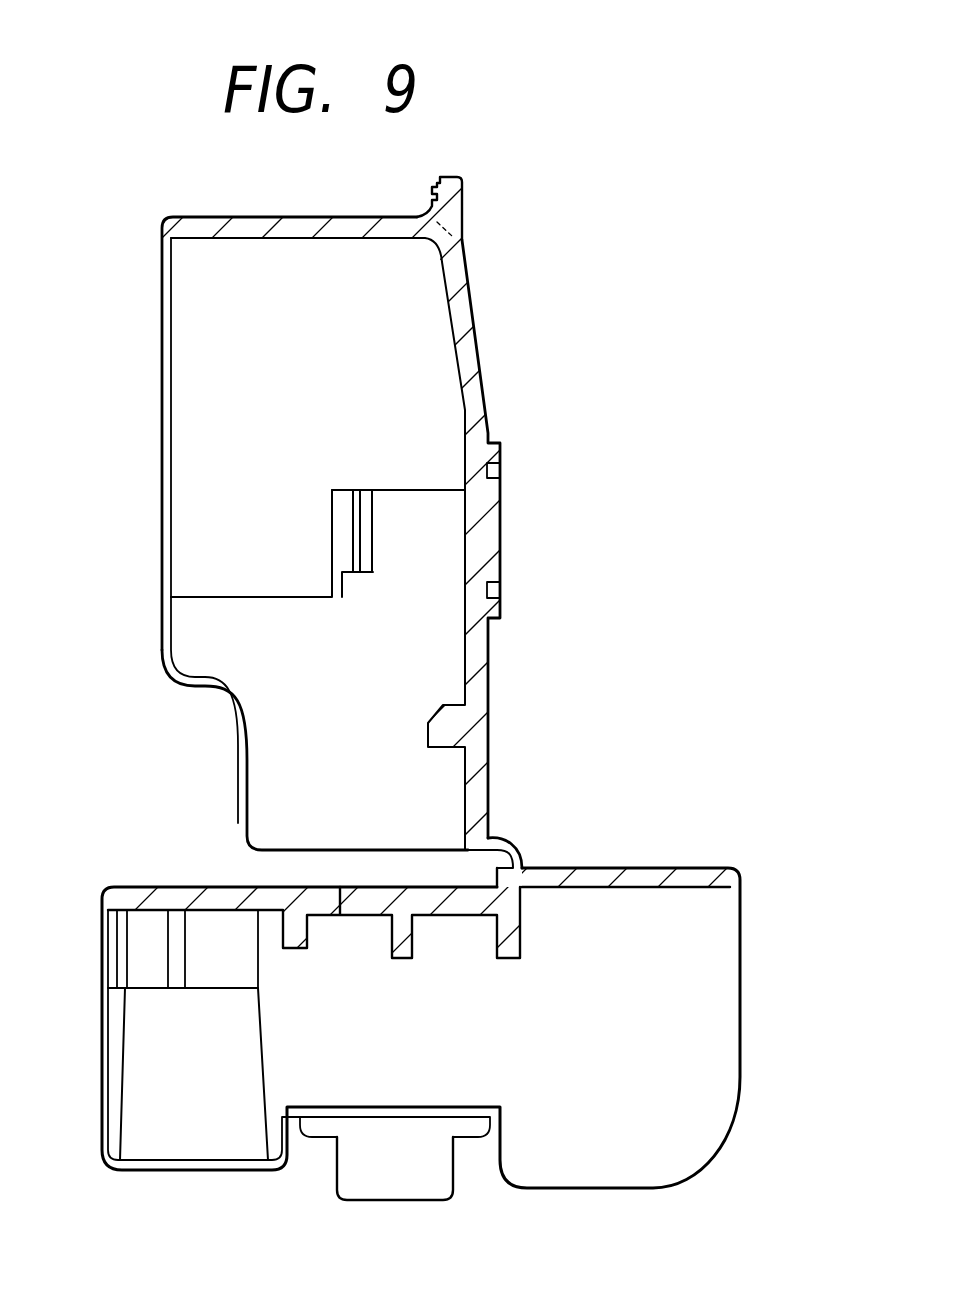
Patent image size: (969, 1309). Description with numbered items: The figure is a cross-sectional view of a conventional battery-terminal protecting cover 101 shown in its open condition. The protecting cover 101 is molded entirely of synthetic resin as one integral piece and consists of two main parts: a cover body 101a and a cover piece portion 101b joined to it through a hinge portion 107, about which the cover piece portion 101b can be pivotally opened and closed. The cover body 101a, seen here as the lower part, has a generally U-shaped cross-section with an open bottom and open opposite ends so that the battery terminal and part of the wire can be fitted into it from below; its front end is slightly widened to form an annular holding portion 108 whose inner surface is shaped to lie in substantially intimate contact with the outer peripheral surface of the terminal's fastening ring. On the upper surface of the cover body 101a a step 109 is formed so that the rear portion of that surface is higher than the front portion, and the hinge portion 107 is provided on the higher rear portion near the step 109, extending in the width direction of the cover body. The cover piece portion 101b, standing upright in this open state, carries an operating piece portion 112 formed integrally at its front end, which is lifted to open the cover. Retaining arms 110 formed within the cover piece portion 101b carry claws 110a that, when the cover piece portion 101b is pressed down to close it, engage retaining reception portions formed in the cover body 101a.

The protecting cover 101 is at (550, 565).
The cover body 101a is at (665, 868).
The cover piece portion 101b is at (470, 358).
The hinge portion 107 is at (511, 848).
The annular holding portion 108 is at (186, 1122).
The step 109 is at (500, 878).
The retaining arm 110 is at (440, 522).
The claw 110a is at (338, 525).
The operating piece portion 112 is at (447, 177).